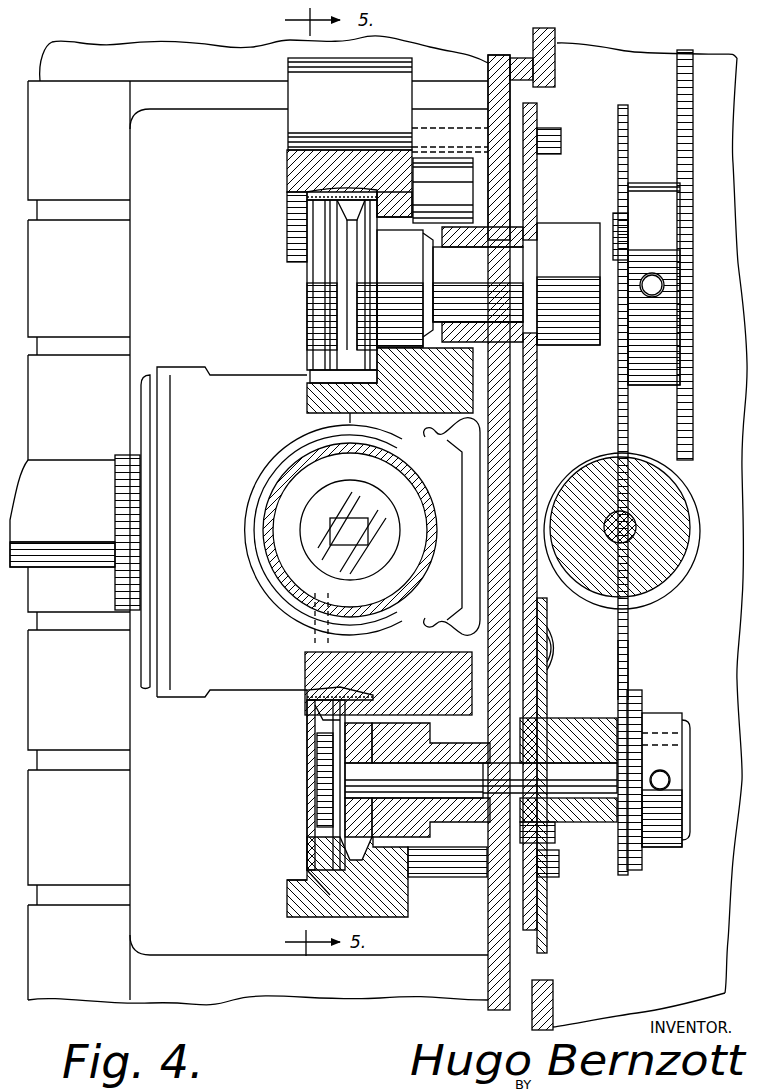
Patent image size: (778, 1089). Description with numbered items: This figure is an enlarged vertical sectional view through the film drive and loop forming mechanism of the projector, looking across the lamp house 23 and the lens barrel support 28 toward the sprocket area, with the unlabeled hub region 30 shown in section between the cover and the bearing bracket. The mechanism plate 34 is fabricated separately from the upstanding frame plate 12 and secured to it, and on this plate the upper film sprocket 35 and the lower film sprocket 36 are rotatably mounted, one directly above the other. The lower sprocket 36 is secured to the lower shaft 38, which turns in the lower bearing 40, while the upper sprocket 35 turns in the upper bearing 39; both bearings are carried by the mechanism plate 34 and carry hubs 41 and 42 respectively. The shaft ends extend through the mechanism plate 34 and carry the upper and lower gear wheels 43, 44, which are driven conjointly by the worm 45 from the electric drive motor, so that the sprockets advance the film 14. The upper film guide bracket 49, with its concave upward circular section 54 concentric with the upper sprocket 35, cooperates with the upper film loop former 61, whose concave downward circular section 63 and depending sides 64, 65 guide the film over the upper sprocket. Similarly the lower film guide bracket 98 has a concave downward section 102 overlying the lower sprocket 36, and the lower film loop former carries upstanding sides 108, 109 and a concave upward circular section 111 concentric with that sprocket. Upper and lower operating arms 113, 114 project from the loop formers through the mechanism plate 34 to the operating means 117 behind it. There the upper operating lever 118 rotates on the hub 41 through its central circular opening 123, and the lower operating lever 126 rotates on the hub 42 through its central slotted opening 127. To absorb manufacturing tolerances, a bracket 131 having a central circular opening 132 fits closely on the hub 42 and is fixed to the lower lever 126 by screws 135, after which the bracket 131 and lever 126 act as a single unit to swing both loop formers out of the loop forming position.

The lamp house 23 is at (128, 63).
The upstanding frame plate 12 is at (553, 36).
The mechanism plate 34 is at (498, 58).
The film 14 is at (338, 196).
The lens barrel support 28 is at (238, 382).
The hub 30 is at (300, 464).
The upper film sprocket 35 is at (325, 275).
The lower film sprocket 36 is at (305, 713).
The lower shaft 38 is at (355, 780).
The upper bearing 39 is at (527, 222).
The lower bearing 40 is at (590, 836).
The hub 41 is at (538, 250).
The hub 42 is at (622, 700).
The upper gear wheel 43 is at (628, 112).
The lower gear wheel 44 is at (630, 658).
The worm 45 is at (690, 500).
The upper film guide bracket 49 is at (300, 396).
The concave upward circular section 54 is at (330, 381).
The upper film loop former 61 is at (290, 163).
The concave downward circular section 63 is at (300, 195).
The depending side 64 is at (300, 202).
The depending side 65 is at (400, 207).
The lower film guide bracket 98 is at (300, 652).
The concave downward section 102 is at (305, 692).
The upstanding side 108 is at (300, 867).
The upstanding side 109 is at (390, 860).
The concave upward circular section 111 is at (322, 893).
The upper operating arm 113 is at (553, 132).
The lower operating arm 114 is at (460, 875).
The operating means 117 is at (568, 412).
The upper operating lever 118 is at (532, 178).
The central circular opening 123 is at (534, 257).
The lower operating lever 126 is at (546, 677).
The central slotted opening 127 is at (566, 725).
The bracket 131 is at (548, 945).
The central circular opening 132 is at (556, 862).
The screws 135 is at (552, 655).